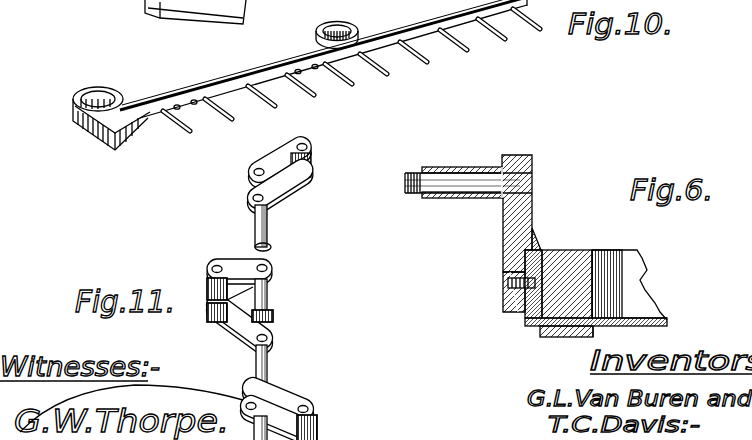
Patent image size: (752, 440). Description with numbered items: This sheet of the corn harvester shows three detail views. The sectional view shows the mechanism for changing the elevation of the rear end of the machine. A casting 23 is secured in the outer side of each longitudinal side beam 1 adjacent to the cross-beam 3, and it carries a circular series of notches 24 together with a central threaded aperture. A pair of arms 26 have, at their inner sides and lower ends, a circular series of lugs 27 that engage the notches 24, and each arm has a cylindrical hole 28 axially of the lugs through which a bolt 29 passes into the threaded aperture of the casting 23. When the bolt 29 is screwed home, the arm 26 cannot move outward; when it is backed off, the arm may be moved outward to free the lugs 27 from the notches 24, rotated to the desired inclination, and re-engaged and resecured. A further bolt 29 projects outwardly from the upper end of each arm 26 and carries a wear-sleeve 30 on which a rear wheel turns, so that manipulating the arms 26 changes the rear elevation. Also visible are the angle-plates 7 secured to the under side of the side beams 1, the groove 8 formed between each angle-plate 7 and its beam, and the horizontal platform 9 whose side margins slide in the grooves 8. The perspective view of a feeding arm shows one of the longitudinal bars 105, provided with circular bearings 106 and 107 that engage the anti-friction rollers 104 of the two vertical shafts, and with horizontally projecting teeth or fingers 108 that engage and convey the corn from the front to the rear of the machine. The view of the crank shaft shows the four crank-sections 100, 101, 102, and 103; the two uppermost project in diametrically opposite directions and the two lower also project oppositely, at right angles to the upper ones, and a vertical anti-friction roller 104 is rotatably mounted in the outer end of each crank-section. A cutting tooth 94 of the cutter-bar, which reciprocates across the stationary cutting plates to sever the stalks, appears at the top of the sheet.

In FIG. 6, the longitudinal side beams 1 is at (583, 250).
In FIG. 6, the cross-beam 3 is at (633, 282).
In FIG. 6, the angle-plates 7 is at (563, 338).
In FIG. 6, the groove 8 is at (595, 332).
In FIG. 6, the horizontal platform 9 is at (668, 322).
In FIG. 6, the casting 23 is at (532, 323).
In FIG. 6, the notches 24 is at (533, 248).
In FIG. 6, the arms 26 is at (503, 243).
In FIG. 6, the lugs 27 is at (542, 250).
In FIG. 6, the cylindrical holes 28 is at (510, 313).
In FIG. 6, the bolt 29 is at (467, 183).
In FIG. 6, the wear-sleeves 30 is at (445, 172).
In FIG. 10, the cutting tooth 94 is at (238, 3).
In FIG. 11, the crank-section 100 is at (291, 399).
In FIG. 11, the crank-section 101 is at (268, 328).
In FIG. 11, the crank-section 102 is at (272, 253).
In FIG. 11, the crank-section 103 is at (287, 154).
In FIG. 11, the anti-friction roller 104 is at (314, 163).
In FIG. 10, the bars 105 is at (259, 74).
In FIG. 10, the circular bearing 106 is at (104, 95).
In FIG. 10, the circular bearing 107 is at (353, 24).
In FIG. 10, the teeth or fingers 108 is at (497, 35).